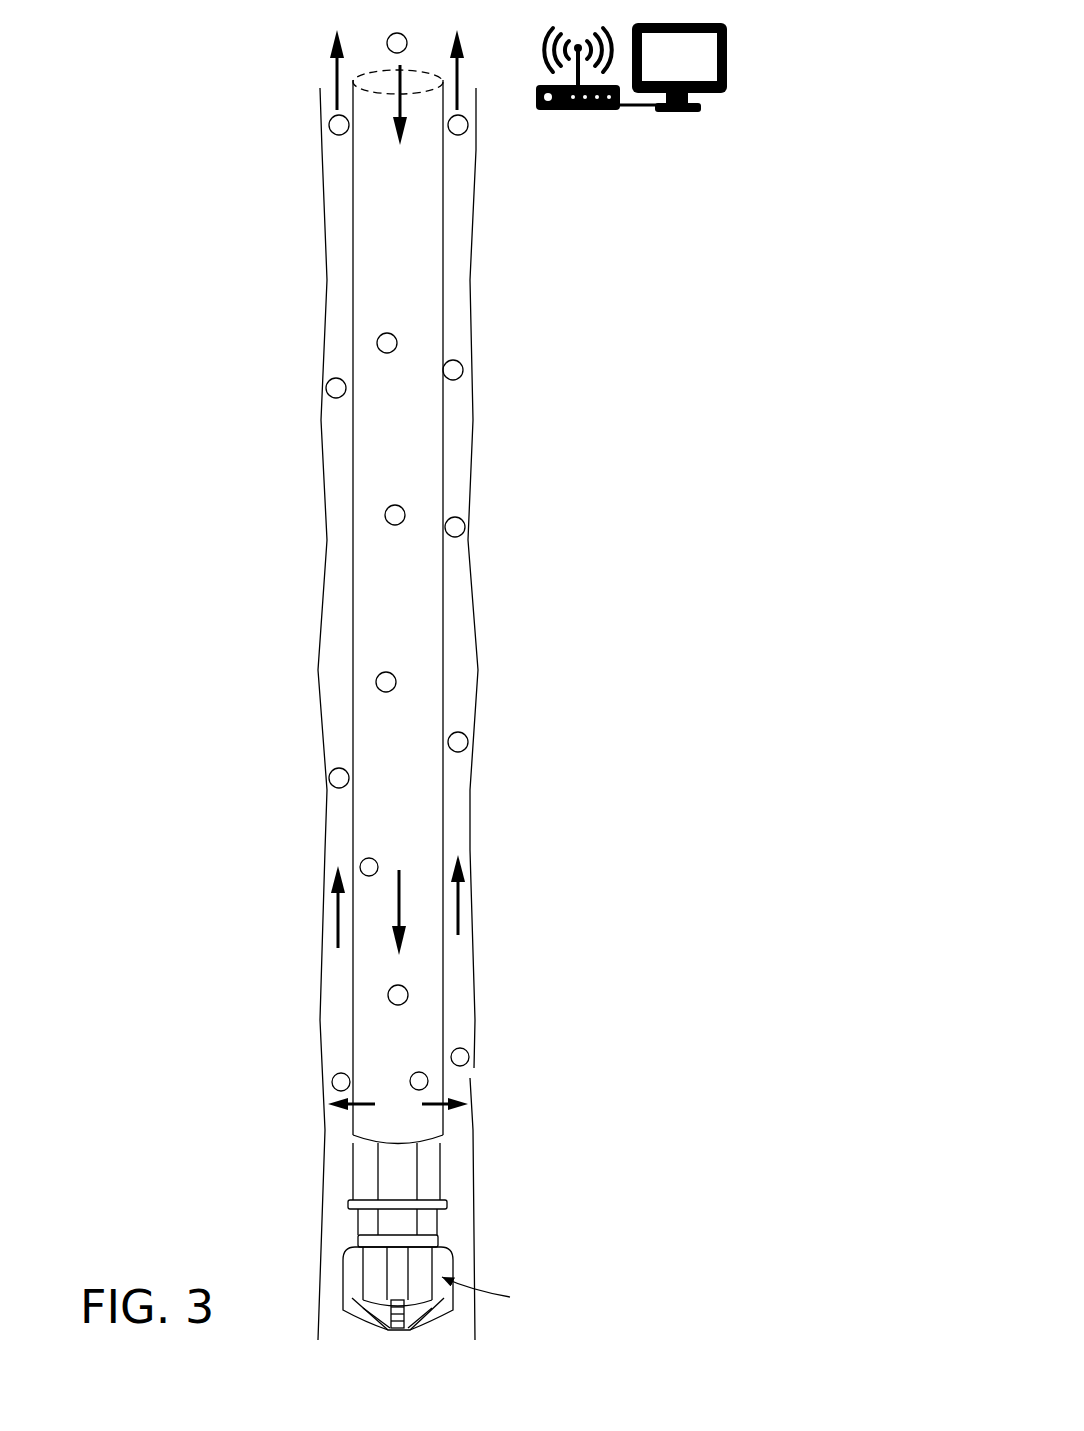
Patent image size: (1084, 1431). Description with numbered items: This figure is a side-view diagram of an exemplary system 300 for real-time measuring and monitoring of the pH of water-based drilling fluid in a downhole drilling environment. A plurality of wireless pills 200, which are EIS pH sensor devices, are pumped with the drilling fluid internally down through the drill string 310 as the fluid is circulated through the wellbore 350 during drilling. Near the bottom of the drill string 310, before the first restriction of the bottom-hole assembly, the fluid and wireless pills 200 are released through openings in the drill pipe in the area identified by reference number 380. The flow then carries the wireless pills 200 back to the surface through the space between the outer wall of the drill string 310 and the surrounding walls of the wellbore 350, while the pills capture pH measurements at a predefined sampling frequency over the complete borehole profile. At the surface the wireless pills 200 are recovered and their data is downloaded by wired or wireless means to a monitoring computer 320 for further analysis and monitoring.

The system 300 is at (150, 121).
The drill string 310 is at (450, 284).
The wireless pills 200 is at (328, 388).
The wellbore 350 is at (478, 702).
The area of openings through the drill pipe 380 is at (463, 1120).
The monitoring computer 320 is at (730, 50).